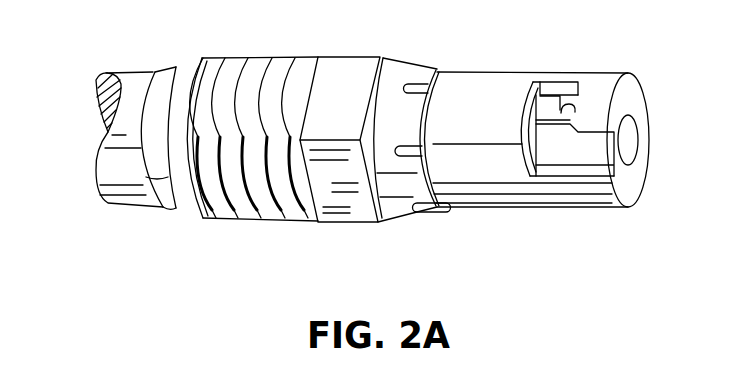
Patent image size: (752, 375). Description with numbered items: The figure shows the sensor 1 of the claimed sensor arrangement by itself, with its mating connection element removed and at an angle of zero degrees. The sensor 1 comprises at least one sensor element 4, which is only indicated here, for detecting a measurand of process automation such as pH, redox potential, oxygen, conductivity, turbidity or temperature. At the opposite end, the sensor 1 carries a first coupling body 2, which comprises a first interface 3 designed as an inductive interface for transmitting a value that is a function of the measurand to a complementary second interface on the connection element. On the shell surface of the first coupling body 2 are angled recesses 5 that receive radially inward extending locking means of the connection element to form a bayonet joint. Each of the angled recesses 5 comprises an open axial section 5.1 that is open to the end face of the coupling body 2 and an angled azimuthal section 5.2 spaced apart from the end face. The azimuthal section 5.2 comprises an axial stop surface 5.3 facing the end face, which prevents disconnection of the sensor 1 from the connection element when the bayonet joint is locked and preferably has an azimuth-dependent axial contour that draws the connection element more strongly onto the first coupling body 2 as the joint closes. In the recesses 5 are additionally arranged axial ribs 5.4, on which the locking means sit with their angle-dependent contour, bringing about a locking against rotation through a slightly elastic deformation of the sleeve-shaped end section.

The sensor 1 is at (370, 160).
The first coupling body 2 is at (486, 127).
The first interface 3 is at (632, 150).
The sensor element 4 is at (122, 133).
The angled recesses 5 is at (562, 145).
The open axial section 5.1 is at (575, 152).
The angled azimuthal section 5.2 is at (556, 104).
The axial stop surface 5.3 is at (570, 105).
The axial ribs 5.4 is at (549, 120).